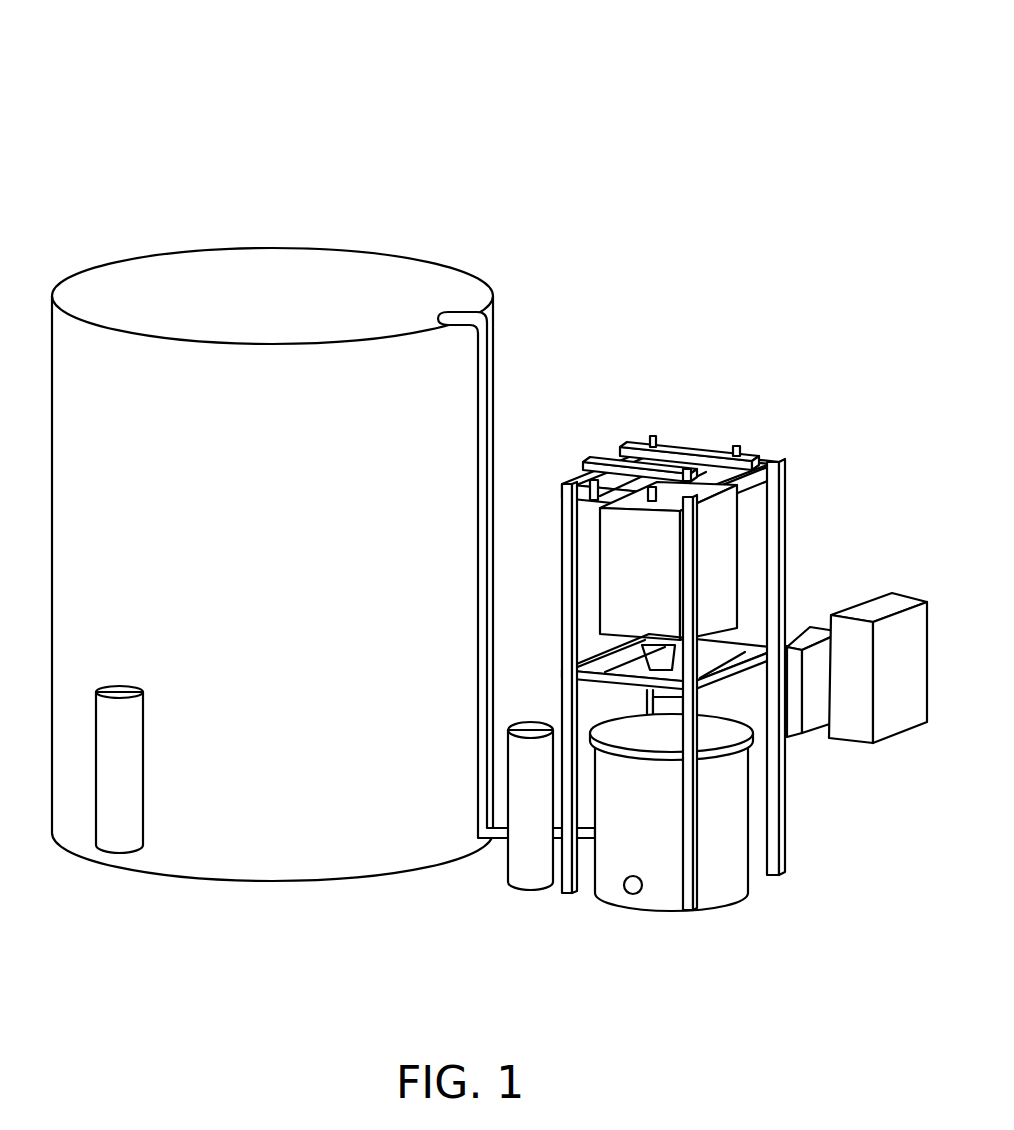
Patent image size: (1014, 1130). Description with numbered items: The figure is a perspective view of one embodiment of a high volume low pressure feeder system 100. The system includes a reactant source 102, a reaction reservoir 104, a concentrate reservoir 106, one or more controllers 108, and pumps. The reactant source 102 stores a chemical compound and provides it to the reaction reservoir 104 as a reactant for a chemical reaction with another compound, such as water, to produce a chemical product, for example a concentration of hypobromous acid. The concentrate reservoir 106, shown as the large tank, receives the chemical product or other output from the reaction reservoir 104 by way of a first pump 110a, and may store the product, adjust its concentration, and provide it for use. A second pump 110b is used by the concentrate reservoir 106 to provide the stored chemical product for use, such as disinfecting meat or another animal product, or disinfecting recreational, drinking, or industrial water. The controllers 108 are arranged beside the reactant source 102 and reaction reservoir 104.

The high volume low pressure feeder system 100 is at (92, 58).
The reactant source 102 is at (597, 537).
The reaction reservoir 104 is at (657, 740).
The concentrate reservoir 106 is at (88, 284).
The controller 108 is at (912, 593).
The first pump 110a is at (546, 727).
The second pump 110b is at (126, 688).